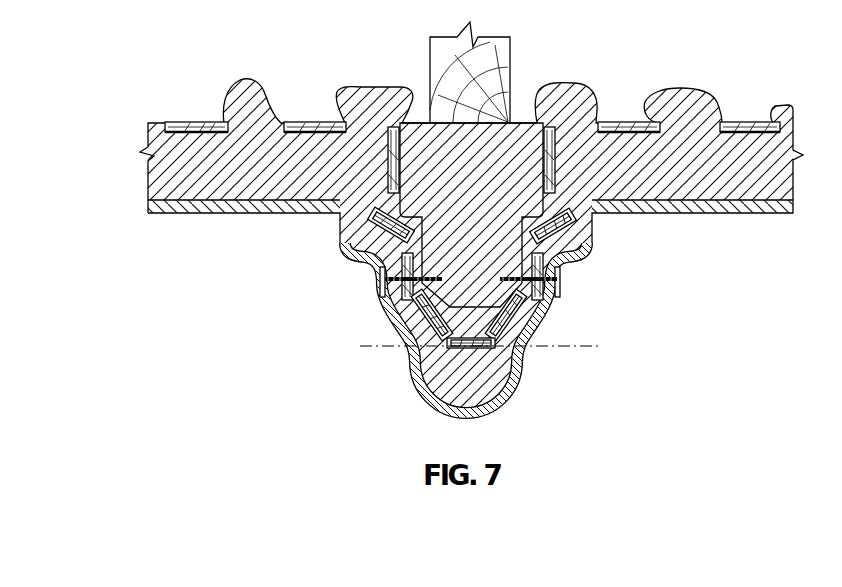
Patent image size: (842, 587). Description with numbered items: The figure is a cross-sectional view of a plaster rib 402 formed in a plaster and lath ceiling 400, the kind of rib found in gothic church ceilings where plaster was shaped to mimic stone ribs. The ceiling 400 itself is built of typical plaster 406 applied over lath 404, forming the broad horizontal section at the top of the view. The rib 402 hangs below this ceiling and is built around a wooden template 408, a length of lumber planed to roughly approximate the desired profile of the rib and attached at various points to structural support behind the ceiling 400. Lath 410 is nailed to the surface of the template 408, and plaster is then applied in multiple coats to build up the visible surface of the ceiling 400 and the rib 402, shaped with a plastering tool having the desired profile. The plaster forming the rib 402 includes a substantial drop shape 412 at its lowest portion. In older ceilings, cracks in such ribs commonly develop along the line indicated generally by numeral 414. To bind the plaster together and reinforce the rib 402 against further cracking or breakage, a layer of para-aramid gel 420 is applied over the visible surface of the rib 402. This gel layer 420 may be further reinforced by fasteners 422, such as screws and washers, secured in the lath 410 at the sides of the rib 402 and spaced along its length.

The plaster and lath ceiling 400 is at (196, 273).
The plaster rib 402 is at (620, 364).
The lath 404 is at (300, 123).
The plaster 406 is at (713, 183).
The wooden template 408 is at (509, 135).
The lath 410 is at (358, 237).
The drop shape 412 is at (448, 371).
The crack line 414 is at (386, 347).
The layer of para-aramid gel 420 is at (497, 407).
The fasteners 422 is at (515, 273).